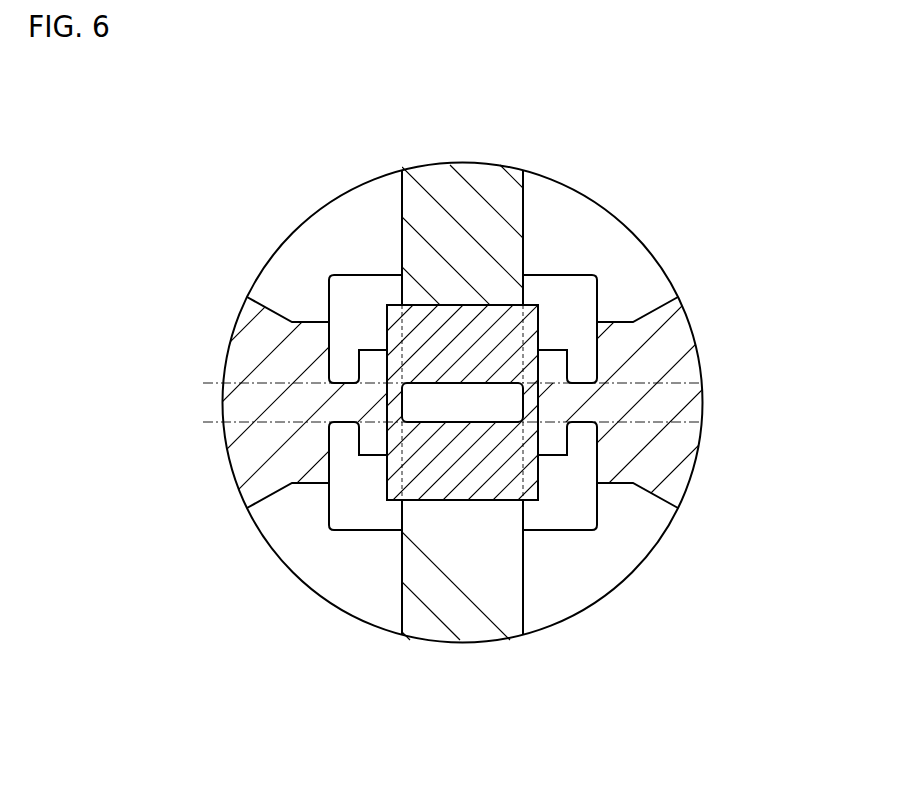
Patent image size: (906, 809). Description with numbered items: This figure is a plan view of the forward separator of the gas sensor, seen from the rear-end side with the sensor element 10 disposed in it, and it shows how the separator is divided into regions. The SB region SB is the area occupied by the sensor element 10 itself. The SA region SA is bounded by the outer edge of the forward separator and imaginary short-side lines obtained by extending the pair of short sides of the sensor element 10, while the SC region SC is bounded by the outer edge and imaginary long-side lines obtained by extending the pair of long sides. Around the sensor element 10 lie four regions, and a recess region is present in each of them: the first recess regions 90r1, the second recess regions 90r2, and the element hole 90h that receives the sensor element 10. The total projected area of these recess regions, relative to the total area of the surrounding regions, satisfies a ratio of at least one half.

The sensor element 10 is at (427, 433).
The first recess regions 90r1 is at (463, 193).
The second recess regions 90r2 is at (270, 350).
The element hole 90h is at (475, 327).
The SA region SA is at (523, 638).
The SB region SB is at (493, 413).
The SC region SC is at (207, 383).